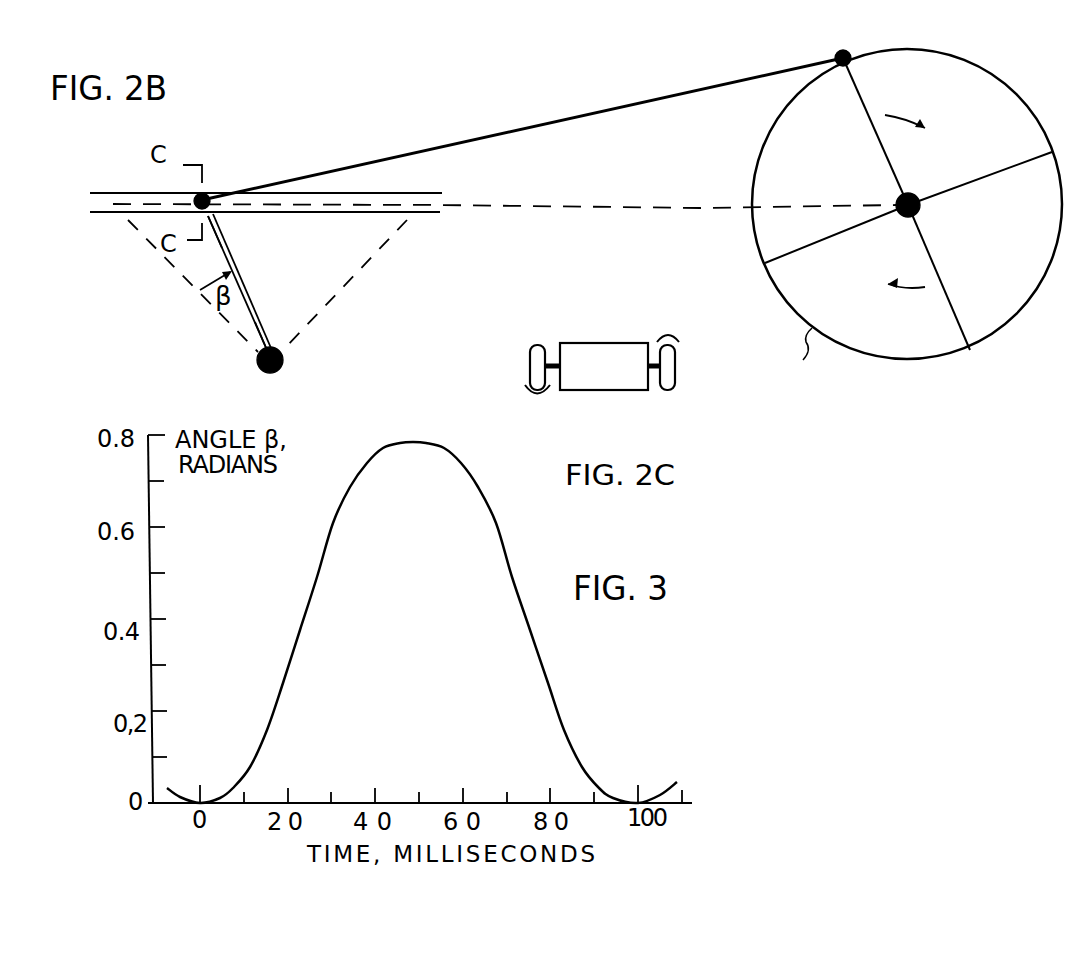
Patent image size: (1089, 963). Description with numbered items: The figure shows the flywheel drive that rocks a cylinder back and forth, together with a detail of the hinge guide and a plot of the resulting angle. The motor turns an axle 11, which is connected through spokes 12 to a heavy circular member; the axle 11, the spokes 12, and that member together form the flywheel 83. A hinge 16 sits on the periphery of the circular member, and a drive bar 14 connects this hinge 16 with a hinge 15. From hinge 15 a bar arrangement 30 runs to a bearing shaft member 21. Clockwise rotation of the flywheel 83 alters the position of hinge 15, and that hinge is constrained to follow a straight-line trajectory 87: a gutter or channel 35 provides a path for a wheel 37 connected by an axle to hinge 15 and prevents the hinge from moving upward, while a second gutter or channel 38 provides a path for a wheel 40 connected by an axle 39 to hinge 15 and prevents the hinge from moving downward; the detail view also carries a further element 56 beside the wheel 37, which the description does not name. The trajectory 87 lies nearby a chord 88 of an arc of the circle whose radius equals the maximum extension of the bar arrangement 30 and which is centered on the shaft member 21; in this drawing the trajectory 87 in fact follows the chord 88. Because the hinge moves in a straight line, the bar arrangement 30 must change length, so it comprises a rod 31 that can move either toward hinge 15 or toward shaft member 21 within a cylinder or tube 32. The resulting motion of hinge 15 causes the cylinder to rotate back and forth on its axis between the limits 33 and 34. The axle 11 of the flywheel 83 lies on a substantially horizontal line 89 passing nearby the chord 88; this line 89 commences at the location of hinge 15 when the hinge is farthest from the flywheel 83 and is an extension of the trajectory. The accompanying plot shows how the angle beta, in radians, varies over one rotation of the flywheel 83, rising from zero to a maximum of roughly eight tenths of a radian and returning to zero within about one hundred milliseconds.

In FIG. 2B, the axle 11 is at (898, 198).
In FIG. 2B, the spokes 12 is at (867, 111).
In FIG. 2B, the drive bar 14 is at (522, 129).
In FIG. 2B, the hinge 15 is at (190, 192).
In FIG. 2C, the hinge 15 is at (604, 366).
In FIG. 2B, the hinge 16 is at (860, 42).
In FIG. 2B, the bearing shaft member 21 is at (253, 362).
In FIG. 2B, the bar arrangement 30 is at (247, 253).
In FIG. 2B, the rod 31 is at (217, 217).
In FIG. 2B, the cylinder or tube 32 is at (260, 318).
In FIG. 2B, the limit 33 is at (173, 273).
In FIG. 2B, the limit 34 is at (352, 273).
In FIG. 2B, the gutter or channel 35 is at (110, 188).
In FIG. 2C, the gutter or channel 35 is at (673, 333).
In FIG. 2C, the wheel 37 is at (675, 382).
In FIG. 2B, the second gutter or channel 38 is at (112, 218).
In FIG. 2C, the second gutter or channel 38 is at (537, 405).
In FIG. 2C, the axle 39 is at (557, 362).
In FIG. 2C, the wheel 40 is at (511, 364).
In FIG. 2C, the axle 56 is at (655, 383).
In FIG. 2B, the flywheel 83 is at (960, 60).
In FIG. 2B, the straight-line trajectory 87 is at (328, 207).
In FIG. 2B, the chord 88 is at (328, 207).
In FIG. 2B, the horizontal line 89 is at (693, 207).